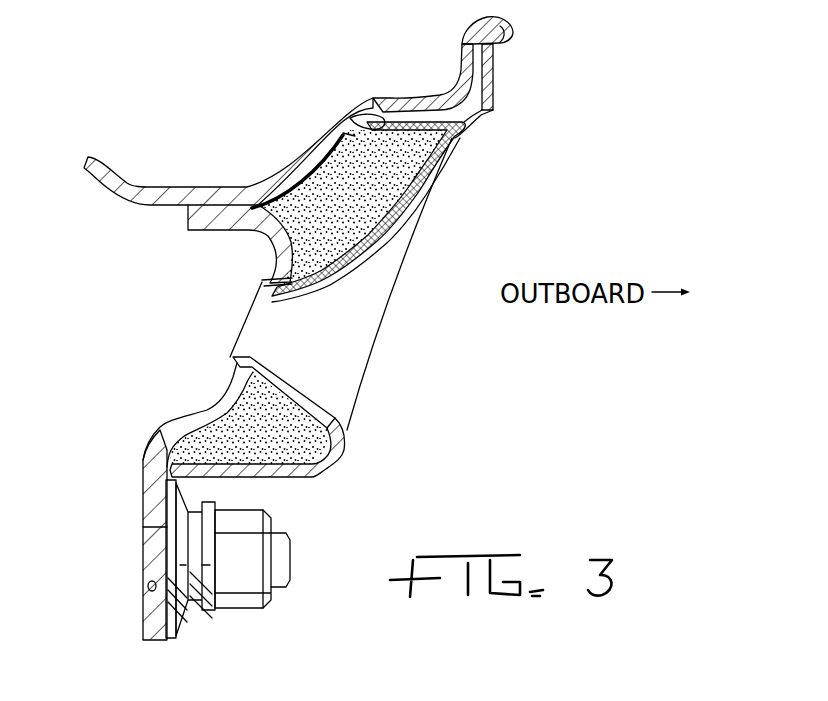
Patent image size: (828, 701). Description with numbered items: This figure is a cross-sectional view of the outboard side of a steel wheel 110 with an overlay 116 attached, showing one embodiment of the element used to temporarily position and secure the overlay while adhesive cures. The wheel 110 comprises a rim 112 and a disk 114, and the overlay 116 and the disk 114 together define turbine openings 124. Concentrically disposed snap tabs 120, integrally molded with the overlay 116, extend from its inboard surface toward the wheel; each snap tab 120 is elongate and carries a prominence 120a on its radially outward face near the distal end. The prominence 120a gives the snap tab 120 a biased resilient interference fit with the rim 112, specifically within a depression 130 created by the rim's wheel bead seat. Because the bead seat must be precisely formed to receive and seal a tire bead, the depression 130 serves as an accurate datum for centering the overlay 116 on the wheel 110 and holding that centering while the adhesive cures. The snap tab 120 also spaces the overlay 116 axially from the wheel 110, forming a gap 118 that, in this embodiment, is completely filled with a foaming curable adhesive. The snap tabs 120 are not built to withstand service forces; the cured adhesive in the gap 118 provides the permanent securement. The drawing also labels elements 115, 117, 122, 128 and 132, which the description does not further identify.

The steel wheel 110 is at (240, 115).
The rim 112 is at (433, 95).
The disk 114 is at (170, 427).
The hub flange 115 is at (132, 187).
The overlay 116 is at (443, 150).
The rim wall 117 is at (360, 263).
The gap 118 is at (363, 217).
The snap tab 120 is at (392, 152).
The prominence 120a is at (379, 116).
The rim flange 122 is at (510, 30).
The turbine openings 124 is at (280, 278).
The bolt hole 128 is at (148, 585).
The depression 130 is at (350, 135).
The nut 132 is at (233, 603).